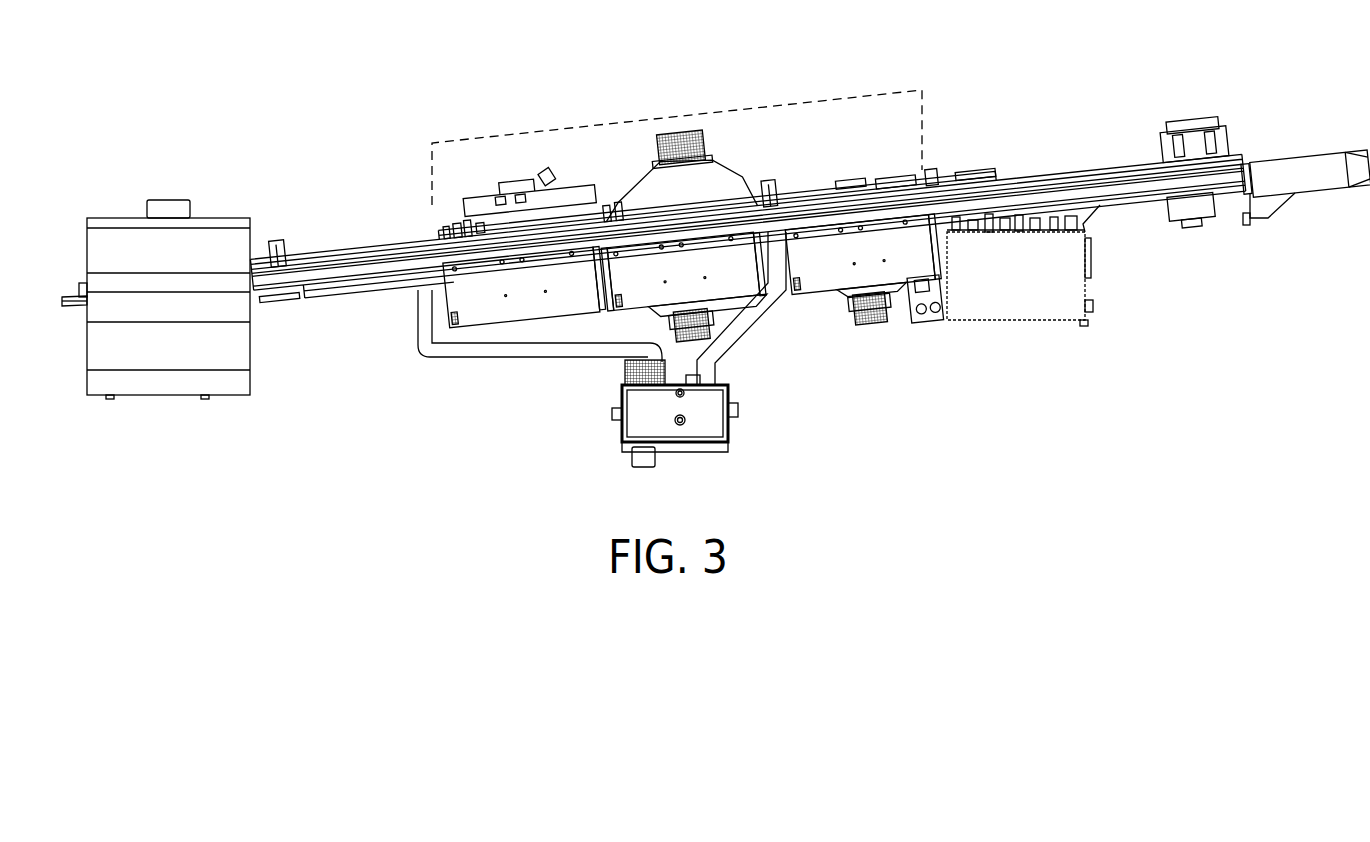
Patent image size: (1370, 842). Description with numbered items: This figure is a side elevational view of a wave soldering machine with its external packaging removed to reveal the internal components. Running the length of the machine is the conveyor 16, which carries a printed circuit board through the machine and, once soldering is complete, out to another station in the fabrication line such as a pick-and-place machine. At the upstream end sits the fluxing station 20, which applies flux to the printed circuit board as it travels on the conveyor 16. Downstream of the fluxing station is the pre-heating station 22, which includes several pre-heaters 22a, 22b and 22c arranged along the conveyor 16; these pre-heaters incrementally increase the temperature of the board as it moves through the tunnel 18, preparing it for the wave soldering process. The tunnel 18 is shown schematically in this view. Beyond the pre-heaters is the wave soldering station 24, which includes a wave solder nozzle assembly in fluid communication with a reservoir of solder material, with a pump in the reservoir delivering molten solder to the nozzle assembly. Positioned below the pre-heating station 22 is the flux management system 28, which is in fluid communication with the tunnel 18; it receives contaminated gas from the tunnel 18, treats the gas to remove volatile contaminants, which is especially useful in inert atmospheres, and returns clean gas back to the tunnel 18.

The conveyor 16 is at (365, 266).
The tunnel 18 is at (535, 160).
The fluxing station 20 is at (126, 196).
The pre-heating station 22 is at (705, 98).
The pre-heater 22a is at (524, 200).
The pre-heater 22b is at (668, 206).
The pre-heater 22c is at (836, 188).
The wave soldering station 24 is at (1017, 155).
The flux management system 28 is at (742, 452).